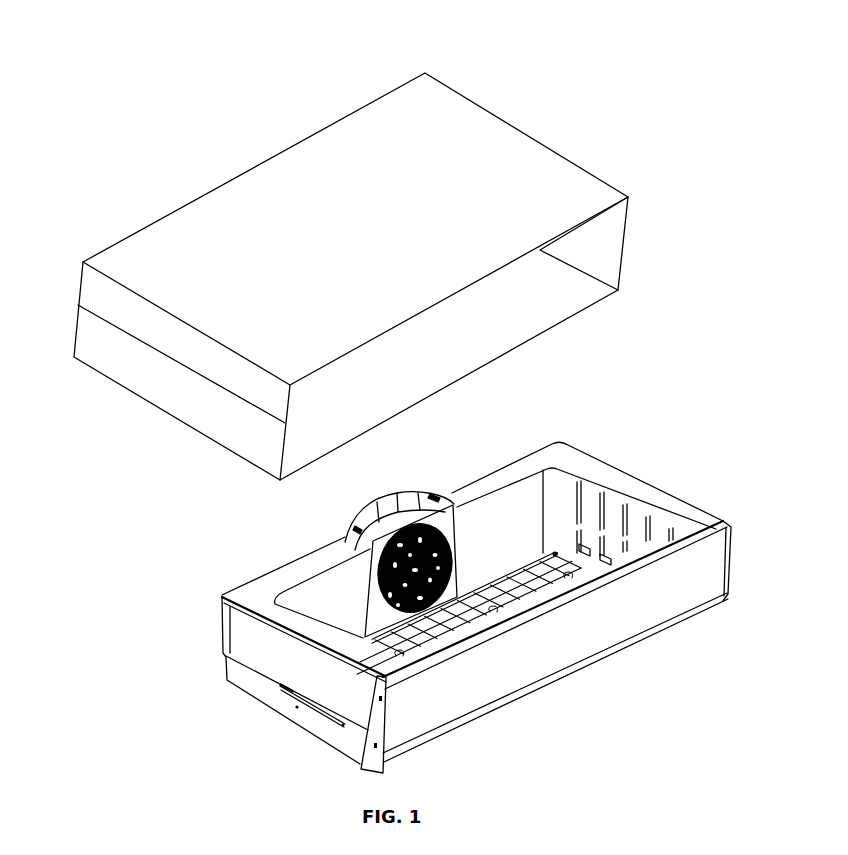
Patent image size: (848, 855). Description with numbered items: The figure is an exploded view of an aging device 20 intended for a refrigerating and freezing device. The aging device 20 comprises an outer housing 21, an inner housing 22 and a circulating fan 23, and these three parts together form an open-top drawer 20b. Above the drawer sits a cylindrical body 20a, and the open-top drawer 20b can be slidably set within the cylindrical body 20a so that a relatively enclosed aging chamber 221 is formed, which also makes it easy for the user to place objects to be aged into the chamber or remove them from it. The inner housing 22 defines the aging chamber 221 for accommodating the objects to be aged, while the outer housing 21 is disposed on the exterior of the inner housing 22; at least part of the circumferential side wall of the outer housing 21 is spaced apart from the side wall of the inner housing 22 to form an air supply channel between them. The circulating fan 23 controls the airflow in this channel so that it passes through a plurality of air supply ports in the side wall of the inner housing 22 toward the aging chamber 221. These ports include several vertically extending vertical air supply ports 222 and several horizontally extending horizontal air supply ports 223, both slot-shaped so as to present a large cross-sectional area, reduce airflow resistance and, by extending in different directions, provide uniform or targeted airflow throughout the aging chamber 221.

The aging device 20 is at (76, 37).
The cylindrical body 20a is at (517, 170).
The open-top drawer 20b is at (553, 689).
The outer housing 21 is at (245, 640).
The inner housing 22 is at (326, 588).
The aging chamber 221 is at (500, 537).
The vertical air supply ports 222 is at (670, 518).
The horizontal air supply ports 223 is at (605, 550).
The circulating fan 23 is at (418, 497).